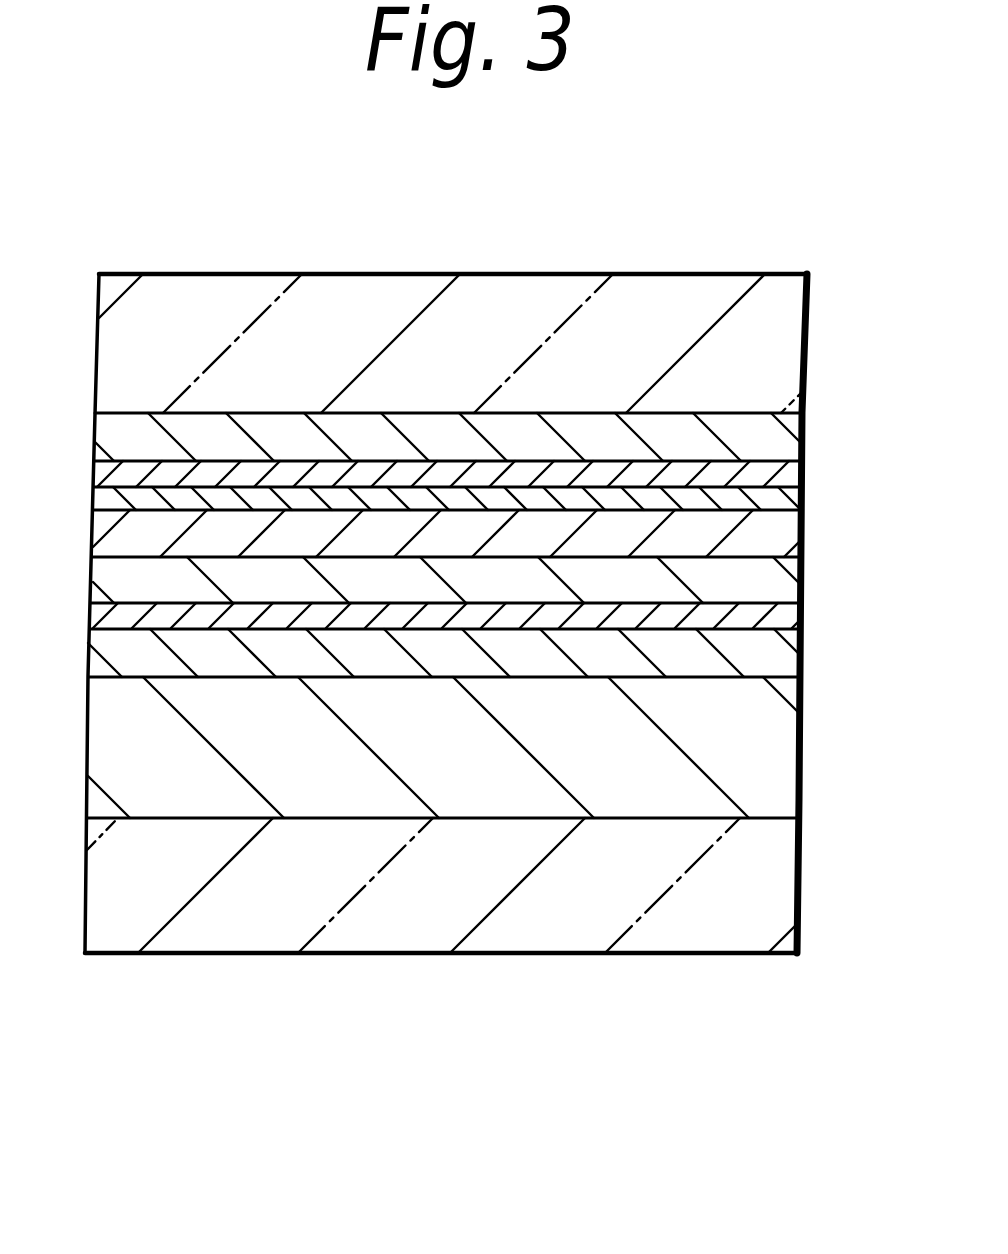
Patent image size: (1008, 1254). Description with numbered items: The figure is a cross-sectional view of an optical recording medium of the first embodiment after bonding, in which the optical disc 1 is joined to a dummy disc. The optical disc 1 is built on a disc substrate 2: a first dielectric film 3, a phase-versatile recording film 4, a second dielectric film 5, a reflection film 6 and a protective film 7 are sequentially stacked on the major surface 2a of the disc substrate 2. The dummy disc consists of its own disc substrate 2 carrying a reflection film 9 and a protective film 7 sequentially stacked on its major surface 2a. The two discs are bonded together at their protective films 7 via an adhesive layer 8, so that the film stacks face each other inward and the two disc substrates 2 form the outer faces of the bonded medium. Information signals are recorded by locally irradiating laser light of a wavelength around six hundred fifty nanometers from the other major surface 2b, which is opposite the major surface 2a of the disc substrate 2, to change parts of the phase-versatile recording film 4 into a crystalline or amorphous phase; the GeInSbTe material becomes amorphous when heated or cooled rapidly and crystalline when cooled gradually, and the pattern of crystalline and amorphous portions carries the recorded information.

The optical disc 1 is at (352, 975).
The disc substrate 2 is at (480, 298).
The major surface 2a is at (648, 413).
The other major surface 2b is at (578, 273).
The first dielectric film 3 is at (798, 426).
The phase-versatile recording film 4 is at (788, 471).
The second dielectric film 5 is at (788, 499).
The reflection film 6 is at (781, 537).
The protective film 7 is at (781, 579).
The adhesive layer 8 is at (790, 615).
The reflection film 9 is at (758, 784).